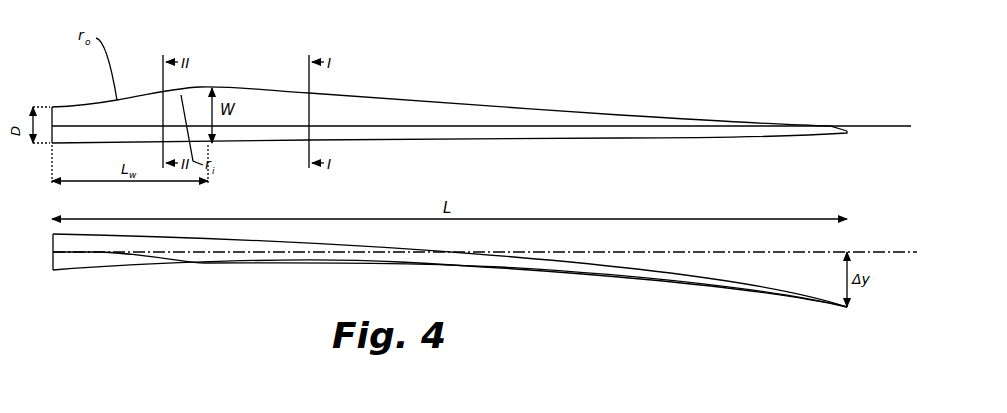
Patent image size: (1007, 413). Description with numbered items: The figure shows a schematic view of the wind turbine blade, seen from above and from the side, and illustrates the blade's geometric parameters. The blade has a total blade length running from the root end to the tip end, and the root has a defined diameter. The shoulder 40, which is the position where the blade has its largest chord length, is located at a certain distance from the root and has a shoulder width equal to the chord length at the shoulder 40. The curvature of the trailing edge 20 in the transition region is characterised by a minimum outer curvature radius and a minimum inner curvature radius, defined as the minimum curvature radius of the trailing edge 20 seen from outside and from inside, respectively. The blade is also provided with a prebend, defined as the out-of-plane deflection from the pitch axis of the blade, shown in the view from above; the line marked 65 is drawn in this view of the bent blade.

The trailing edge 20 is at (340, 257).
The shoulder 40 is at (213, 90).
The bend line 65 is at (205, 263).